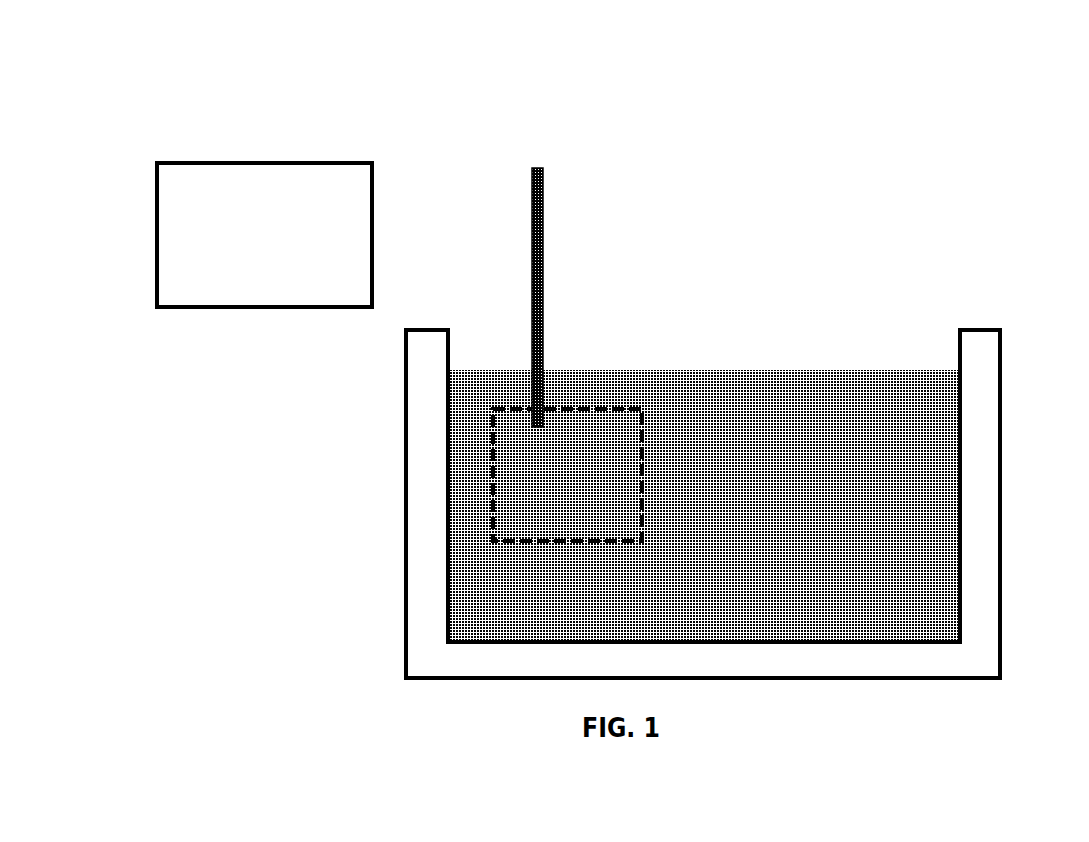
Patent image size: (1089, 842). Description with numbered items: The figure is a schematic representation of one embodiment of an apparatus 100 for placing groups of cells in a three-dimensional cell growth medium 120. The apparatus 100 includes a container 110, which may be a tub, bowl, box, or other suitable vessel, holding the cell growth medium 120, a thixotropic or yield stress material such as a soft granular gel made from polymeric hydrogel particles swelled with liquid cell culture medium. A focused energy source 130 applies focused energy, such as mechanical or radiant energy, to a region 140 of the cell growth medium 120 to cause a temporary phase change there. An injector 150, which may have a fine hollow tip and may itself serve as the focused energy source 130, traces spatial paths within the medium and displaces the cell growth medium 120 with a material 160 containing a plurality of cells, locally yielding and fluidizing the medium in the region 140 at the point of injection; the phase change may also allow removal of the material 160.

The apparatus 100 is at (959, 185).
The container 110 is at (998, 427).
The 3D cell growth medium 120 is at (808, 370).
The focused energy source 130 is at (267, 163).
The region 140 is at (572, 408).
The injector 150 is at (545, 282).
The material 160 is at (535, 168).